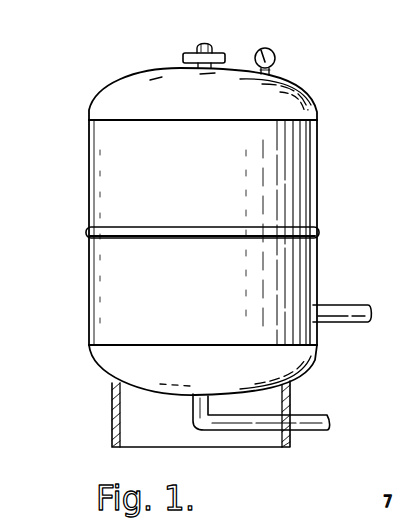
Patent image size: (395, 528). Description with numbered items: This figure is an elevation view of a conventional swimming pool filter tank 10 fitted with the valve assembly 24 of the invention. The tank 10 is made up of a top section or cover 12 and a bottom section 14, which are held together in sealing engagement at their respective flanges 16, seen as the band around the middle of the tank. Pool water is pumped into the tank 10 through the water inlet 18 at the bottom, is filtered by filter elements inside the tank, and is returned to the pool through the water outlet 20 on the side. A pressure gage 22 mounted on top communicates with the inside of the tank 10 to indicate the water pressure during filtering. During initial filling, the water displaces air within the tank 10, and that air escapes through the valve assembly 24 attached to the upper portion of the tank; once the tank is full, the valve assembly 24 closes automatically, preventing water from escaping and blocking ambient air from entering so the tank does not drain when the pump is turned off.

The swimming pool filter tank 10 is at (56, 178).
The top section or cover 12 is at (172, 184).
The bottom section 14 is at (167, 298).
The flanges 16 is at (86, 233).
The water inlet 18 is at (313, 415).
The water outlet 20 is at (338, 313).
The pressure gage 22 is at (274, 54).
The valve assembly 24 is at (205, 43).